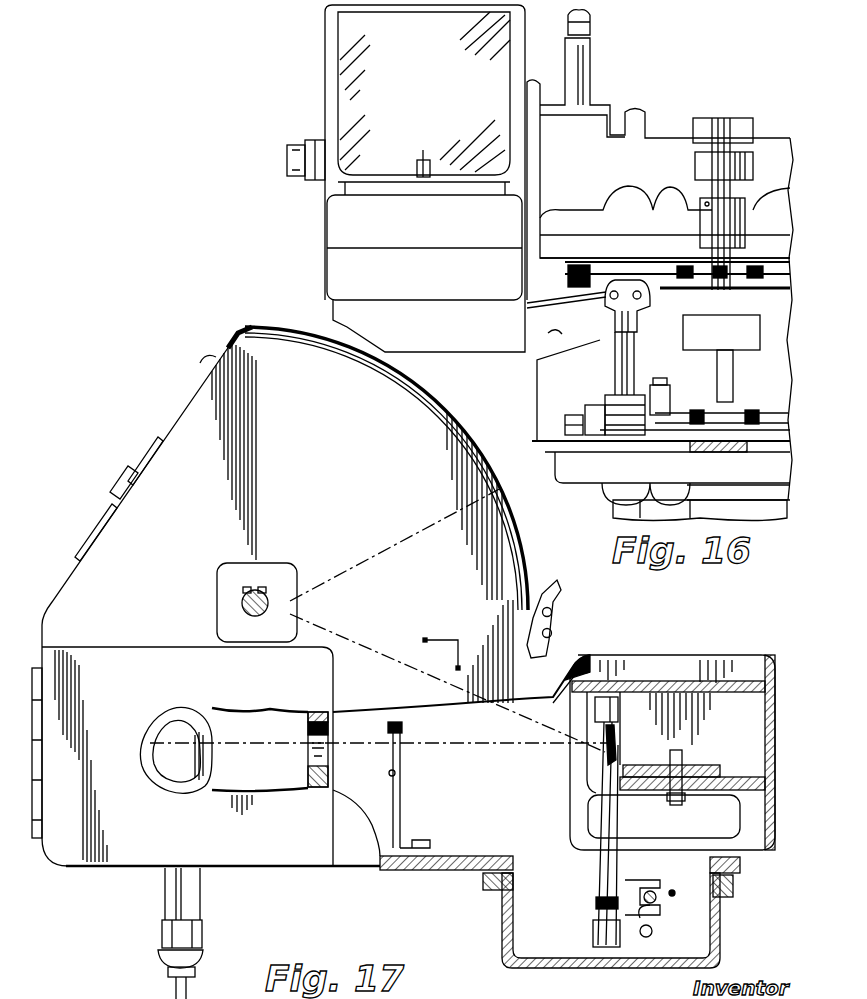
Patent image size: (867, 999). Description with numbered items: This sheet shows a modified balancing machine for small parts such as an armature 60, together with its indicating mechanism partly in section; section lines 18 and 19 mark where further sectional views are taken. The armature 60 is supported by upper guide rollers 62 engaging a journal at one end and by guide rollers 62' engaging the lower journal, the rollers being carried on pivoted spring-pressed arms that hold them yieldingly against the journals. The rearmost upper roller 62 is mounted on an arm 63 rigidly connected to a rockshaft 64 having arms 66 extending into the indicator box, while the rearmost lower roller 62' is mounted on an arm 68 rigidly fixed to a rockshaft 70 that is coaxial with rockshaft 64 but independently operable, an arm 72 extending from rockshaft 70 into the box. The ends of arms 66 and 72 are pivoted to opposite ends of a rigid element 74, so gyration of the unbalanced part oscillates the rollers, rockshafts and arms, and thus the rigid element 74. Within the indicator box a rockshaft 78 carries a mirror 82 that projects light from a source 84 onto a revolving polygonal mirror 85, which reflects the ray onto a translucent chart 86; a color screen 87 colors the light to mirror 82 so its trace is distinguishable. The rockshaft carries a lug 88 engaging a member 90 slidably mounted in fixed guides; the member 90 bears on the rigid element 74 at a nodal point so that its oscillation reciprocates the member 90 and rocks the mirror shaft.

In FIG. 16, the translucent chart 86 is at (350, 96).
In FIG. 17, the translucent chart 86 is at (482, 455).
In FIG. 16, the arm 63 is at (585, 263).
In FIG. 16, the arms 66 is at (527, 303).
In FIG. 17, the arms 66 is at (673, 892).
In FIG. 16, the rockshaft 64 is at (606, 312).
In FIG. 16, the arm 72 is at (552, 333).
In FIG. 17, the arm 72 is at (653, 930).
In FIG. 16, the rockshaft 70 is at (613, 365).
In FIG. 16, the arm 68 is at (600, 420).
In FIG. 16, the upper guide rollers 62 is at (677, 233).
In FIG. 16, the armature 60 is at (738, 347).
In FIG. 16, the guide rollers 62' is at (695, 403).
In FIG. 17, the revolving polygonal mirror 85 is at (217, 596).
In FIG. 17, the light source 84 is at (165, 738).
In FIG. 17, the color screen 87 is at (388, 748).
In FIG. 17, the mirror 82 is at (600, 756).
In FIG. 17, the rockshaft 78 is at (607, 843).
In FIG. 17, the lug 88 is at (596, 903).
In FIG. 17, the rigid element 74 is at (662, 905).
In FIG. 17, the member 90 is at (640, 918).
In FIG. 17, the section line 18 is at (23, 656).
In FIG. 17, the section line 19 is at (697, 630).